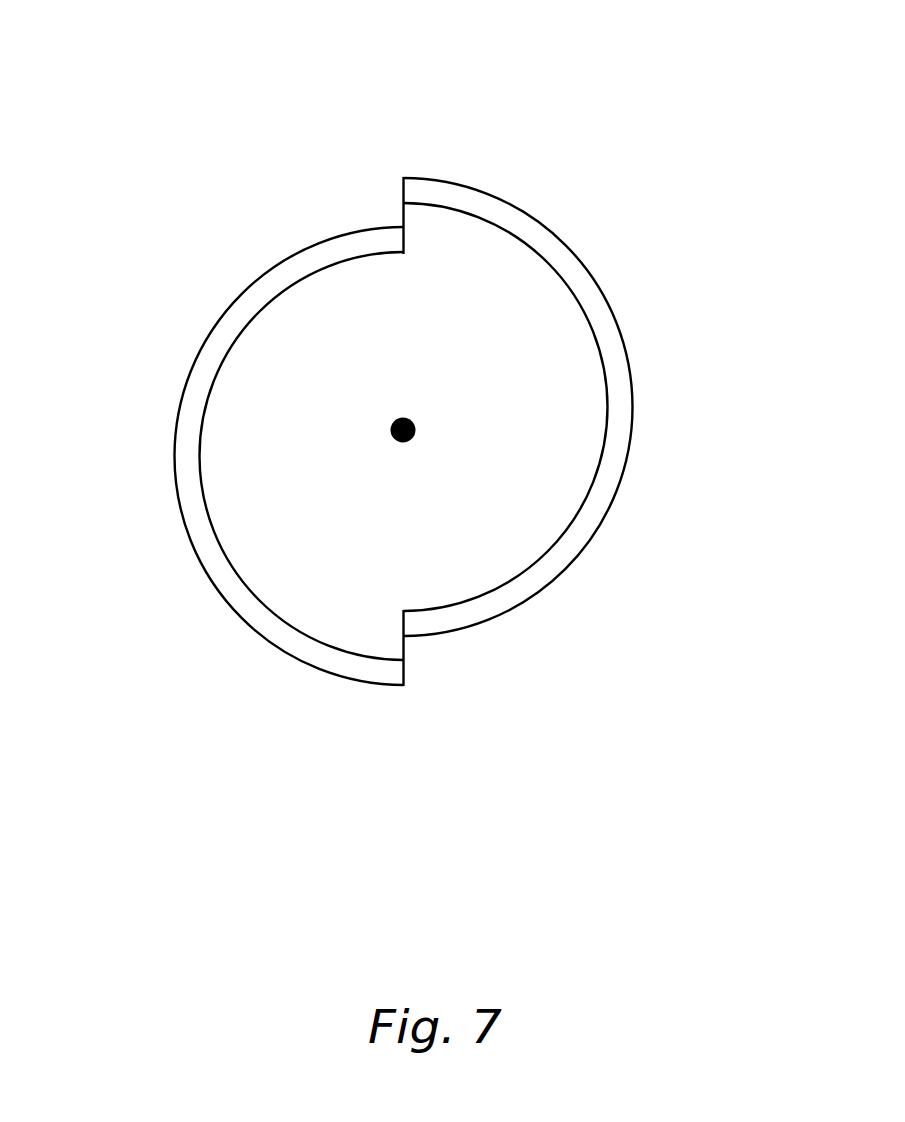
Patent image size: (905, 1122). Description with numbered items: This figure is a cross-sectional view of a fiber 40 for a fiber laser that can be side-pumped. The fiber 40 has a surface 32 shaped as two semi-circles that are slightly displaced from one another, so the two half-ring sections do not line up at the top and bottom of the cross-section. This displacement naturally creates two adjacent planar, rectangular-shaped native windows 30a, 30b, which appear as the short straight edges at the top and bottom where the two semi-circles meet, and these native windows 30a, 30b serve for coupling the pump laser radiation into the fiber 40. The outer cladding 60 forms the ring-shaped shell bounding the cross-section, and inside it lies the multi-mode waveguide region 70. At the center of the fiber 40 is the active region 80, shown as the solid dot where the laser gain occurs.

The native window 30a is at (403, 225).
The native window 30b is at (404, 645).
The surface 32 is at (547, 550).
The fiber 40 is at (142, 410).
The outer cladding 60 is at (625, 431).
The multi-mode waveguide region 70 is at (473, 370).
The active region 80 is at (400, 443).